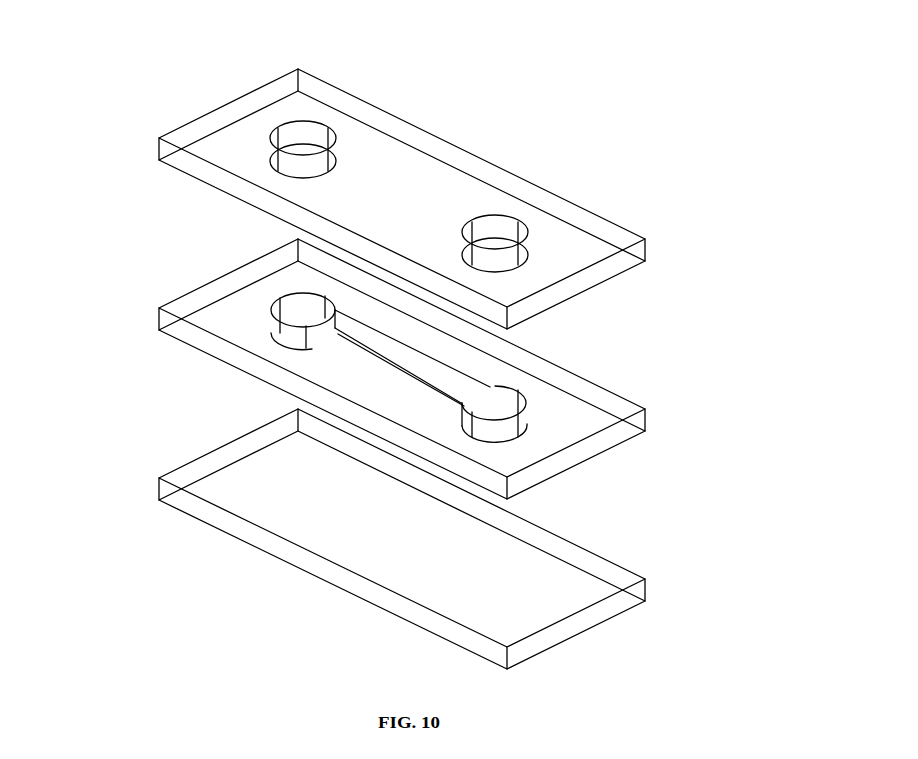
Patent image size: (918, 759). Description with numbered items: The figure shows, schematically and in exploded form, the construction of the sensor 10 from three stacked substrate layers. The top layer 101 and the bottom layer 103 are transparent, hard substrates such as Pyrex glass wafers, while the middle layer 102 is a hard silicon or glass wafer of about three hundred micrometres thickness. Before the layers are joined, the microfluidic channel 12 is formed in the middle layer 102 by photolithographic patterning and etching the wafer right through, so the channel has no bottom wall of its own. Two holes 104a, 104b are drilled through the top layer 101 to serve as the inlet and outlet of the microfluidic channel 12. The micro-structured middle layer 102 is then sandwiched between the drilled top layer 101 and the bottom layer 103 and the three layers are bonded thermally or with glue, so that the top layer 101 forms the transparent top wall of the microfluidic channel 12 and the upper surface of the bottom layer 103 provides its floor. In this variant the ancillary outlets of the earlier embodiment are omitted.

The sensor 10 is at (629, 161).
The top layer 101 is at (202, 117).
The middle layer 102 is at (202, 285).
The bottom layer 103 is at (159, 485).
The hole 104a is at (332, 130).
The hole 104b is at (508, 214).
The microfluidic channel 12 is at (427, 373).